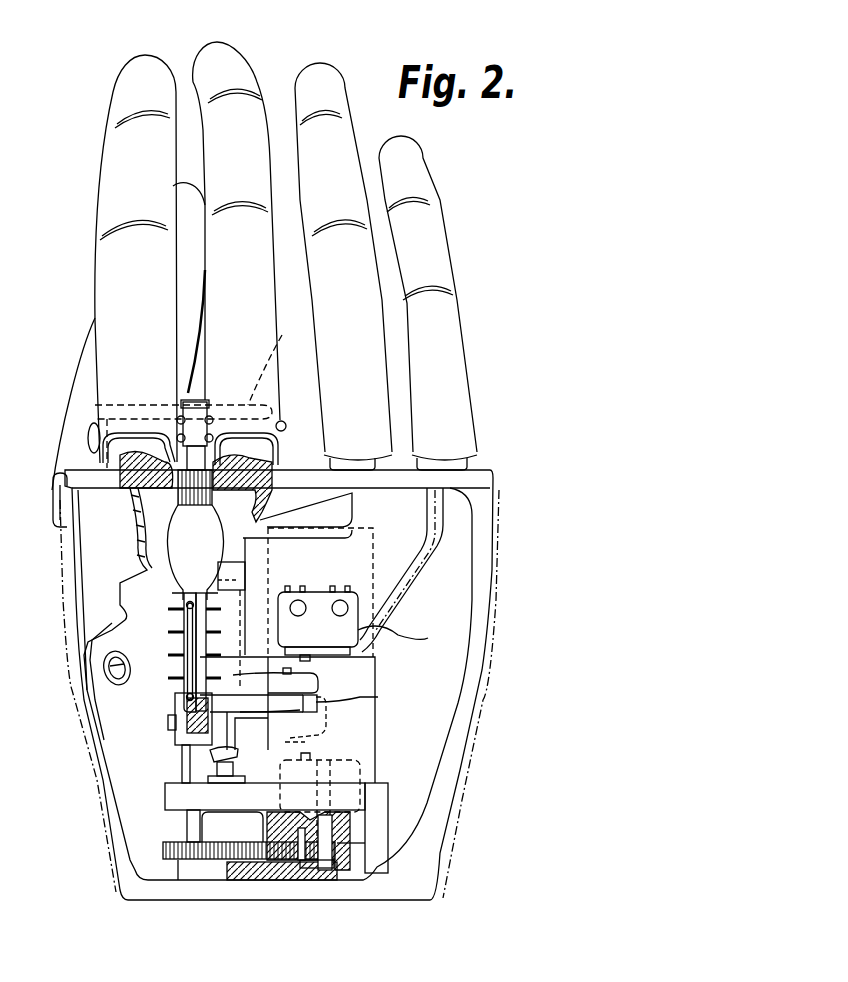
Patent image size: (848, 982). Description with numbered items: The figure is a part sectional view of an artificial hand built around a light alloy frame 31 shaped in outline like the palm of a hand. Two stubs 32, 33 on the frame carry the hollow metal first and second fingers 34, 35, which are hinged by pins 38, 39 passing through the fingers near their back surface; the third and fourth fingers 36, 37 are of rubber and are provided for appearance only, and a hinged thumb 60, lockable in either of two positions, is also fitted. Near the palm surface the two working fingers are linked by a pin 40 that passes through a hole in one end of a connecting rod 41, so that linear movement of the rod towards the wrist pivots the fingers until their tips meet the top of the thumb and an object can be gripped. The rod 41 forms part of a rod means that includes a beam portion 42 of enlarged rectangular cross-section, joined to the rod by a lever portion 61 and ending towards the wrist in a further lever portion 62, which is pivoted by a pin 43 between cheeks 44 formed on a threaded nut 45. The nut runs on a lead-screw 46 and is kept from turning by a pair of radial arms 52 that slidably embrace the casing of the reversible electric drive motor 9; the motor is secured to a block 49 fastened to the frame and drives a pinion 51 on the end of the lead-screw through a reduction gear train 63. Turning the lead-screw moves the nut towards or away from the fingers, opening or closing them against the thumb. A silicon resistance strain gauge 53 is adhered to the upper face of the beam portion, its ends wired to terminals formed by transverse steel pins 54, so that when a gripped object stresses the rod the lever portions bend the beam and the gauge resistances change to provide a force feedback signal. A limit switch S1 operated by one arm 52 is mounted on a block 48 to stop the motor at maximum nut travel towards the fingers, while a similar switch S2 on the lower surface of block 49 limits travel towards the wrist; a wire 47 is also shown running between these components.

The drive motor 9 is at (376, 730).
The light alloy frame 31 is at (63, 556).
The stub 32 is at (103, 440).
The stub 33 is at (276, 447).
The first finger 34 is at (95, 190).
The second finger 35 is at (248, 62).
The third finger 36 is at (344, 98).
The fourth finger 37 is at (425, 168).
The pin 38 is at (90, 422).
The pin 39 is at (281, 421).
The pin 40 is at (201, 392).
The connecting rod 41 is at (175, 490).
The beam portion 42 is at (178, 660).
The pin 43 is at (168, 720).
The cheeks 44 is at (175, 703).
The threaded nut 45 is at (182, 748).
The lead-screw 46 is at (240, 752).
The wire 47 is at (300, 672).
The block 48 is at (277, 622).
The block 49 is at (400, 597).
The pinion 51 is at (178, 860).
The radial arms 52 is at (323, 699).
The silicon resistance strain gauge 53 is at (184, 620).
The transverse steel pins 54 is at (186, 633).
The hinged thumb 60 is at (90, 328).
The lever portion 61 is at (172, 578).
The lever portion 62 is at (192, 725).
The reduction gear train 63 is at (322, 870).
The limit switch S1 is at (404, 638).
The limit switch S2 is at (360, 762).